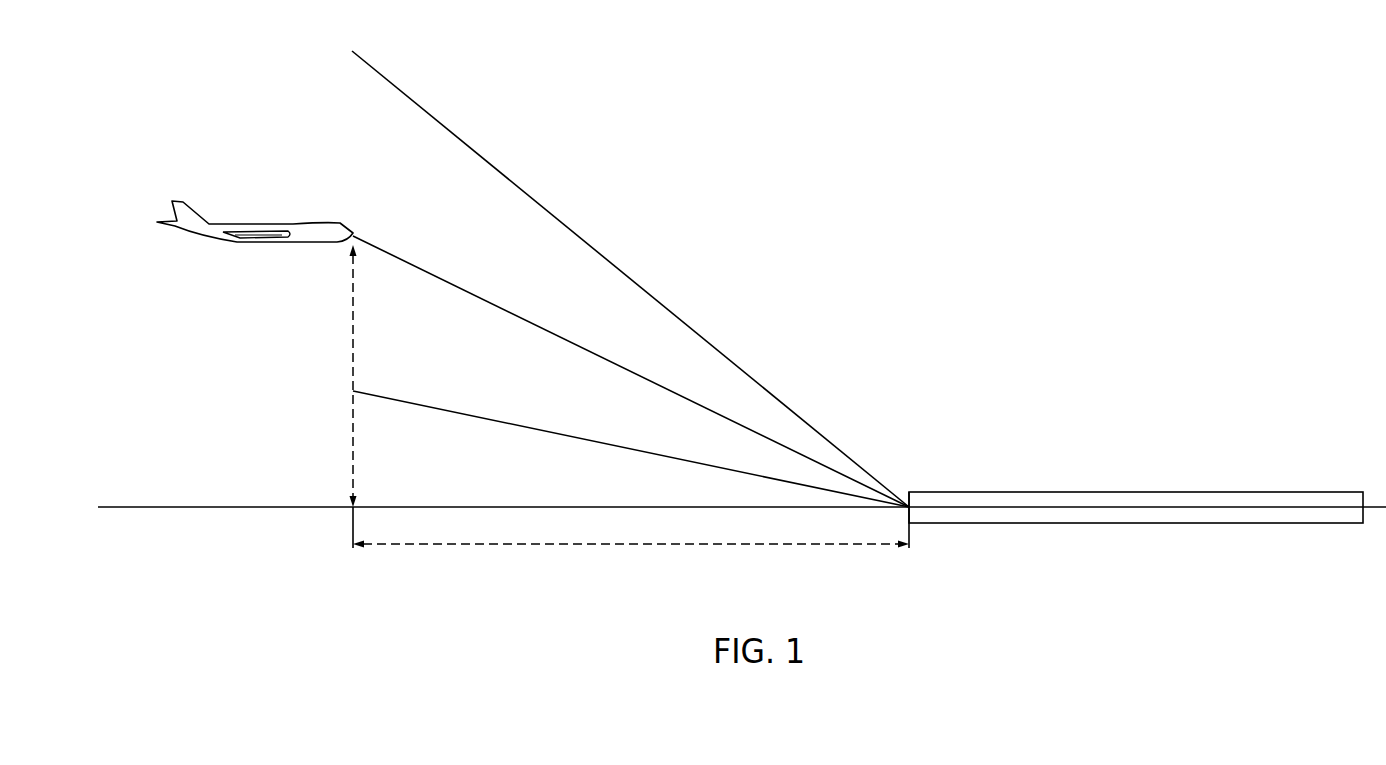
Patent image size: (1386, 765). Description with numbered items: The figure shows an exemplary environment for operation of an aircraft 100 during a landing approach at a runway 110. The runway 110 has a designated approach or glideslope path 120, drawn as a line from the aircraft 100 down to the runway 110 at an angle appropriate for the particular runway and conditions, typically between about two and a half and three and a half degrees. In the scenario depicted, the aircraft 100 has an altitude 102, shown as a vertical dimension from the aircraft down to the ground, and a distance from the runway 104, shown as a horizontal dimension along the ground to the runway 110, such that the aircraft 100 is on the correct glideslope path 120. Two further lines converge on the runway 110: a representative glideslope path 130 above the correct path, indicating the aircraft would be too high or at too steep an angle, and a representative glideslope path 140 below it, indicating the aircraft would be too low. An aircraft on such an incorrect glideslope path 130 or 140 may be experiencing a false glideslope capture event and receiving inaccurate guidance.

The aircraft 100 is at (270, 225).
The altitude 102 is at (352, 352).
The distance from the runway 104 is at (595, 545).
The runway 110 is at (1078, 492).
The glideslope path 120 is at (473, 294).
The representative glideslope path 130 is at (510, 178).
The representative glideslope path 140 is at (461, 414).